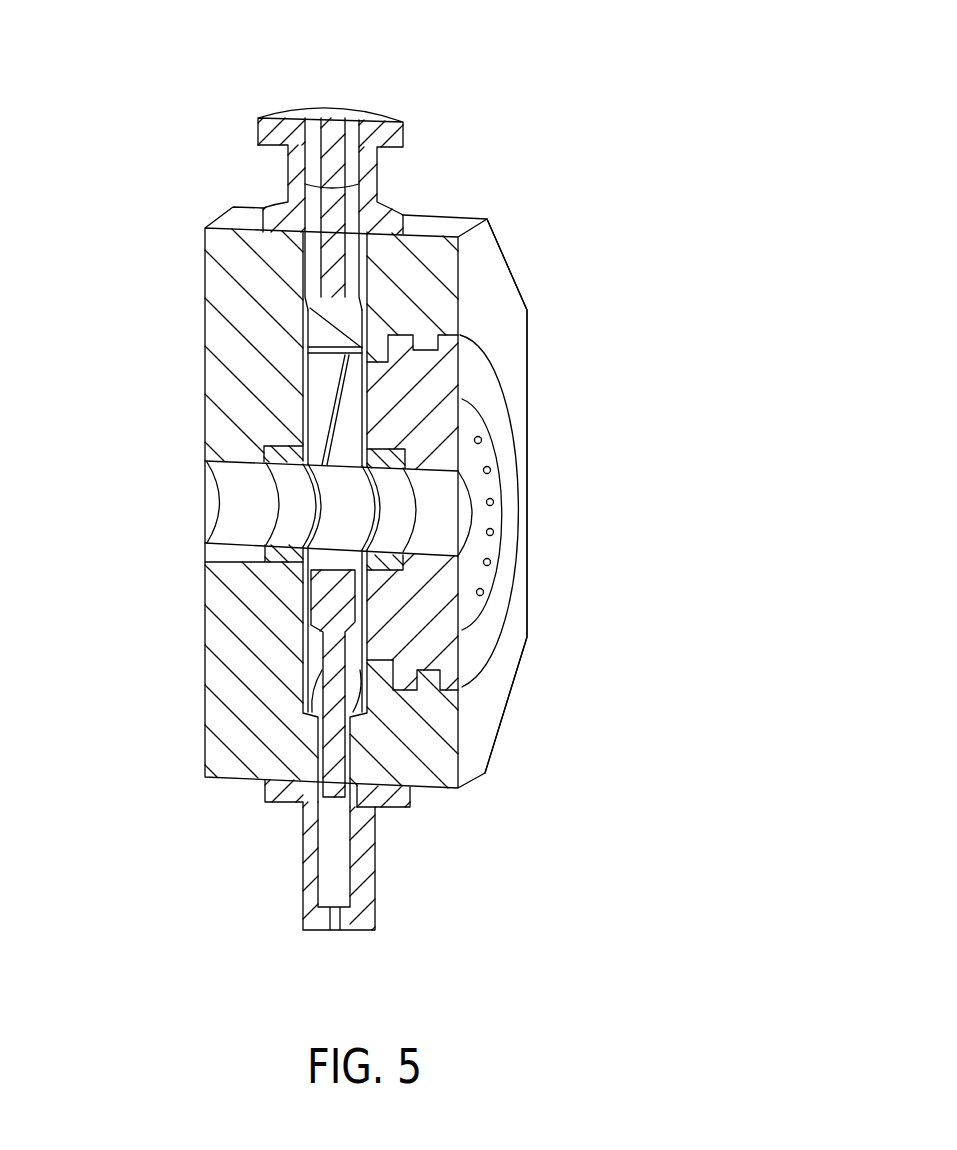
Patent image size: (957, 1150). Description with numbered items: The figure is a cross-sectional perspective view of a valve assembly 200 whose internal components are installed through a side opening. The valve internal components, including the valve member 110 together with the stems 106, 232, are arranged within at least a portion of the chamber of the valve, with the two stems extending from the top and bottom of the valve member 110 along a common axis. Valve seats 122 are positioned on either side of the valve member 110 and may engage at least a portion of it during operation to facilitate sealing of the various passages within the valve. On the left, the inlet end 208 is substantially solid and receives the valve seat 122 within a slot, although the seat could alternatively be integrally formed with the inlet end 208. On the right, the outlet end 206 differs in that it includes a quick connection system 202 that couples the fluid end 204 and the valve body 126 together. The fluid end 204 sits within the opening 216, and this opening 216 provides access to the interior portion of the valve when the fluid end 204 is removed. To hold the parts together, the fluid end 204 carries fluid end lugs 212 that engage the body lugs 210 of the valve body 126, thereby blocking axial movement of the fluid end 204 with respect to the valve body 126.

The valve assembly 200 is at (518, 50).
The stem 106 is at (338, 208).
The opening 216 is at (565, 330).
The valve member 110 is at (327, 390).
The valve seat 122 is at (272, 453).
The fluid end 204 is at (478, 390).
The inlet end 208 is at (164, 532).
The quick connection system 202 is at (574, 658).
The fluid end lug 212 is at (403, 680).
The body lug 210 is at (428, 678).
The outlet end 206 is at (576, 748).
The valve body 126 is at (437, 777).
The stem 232 is at (333, 775).